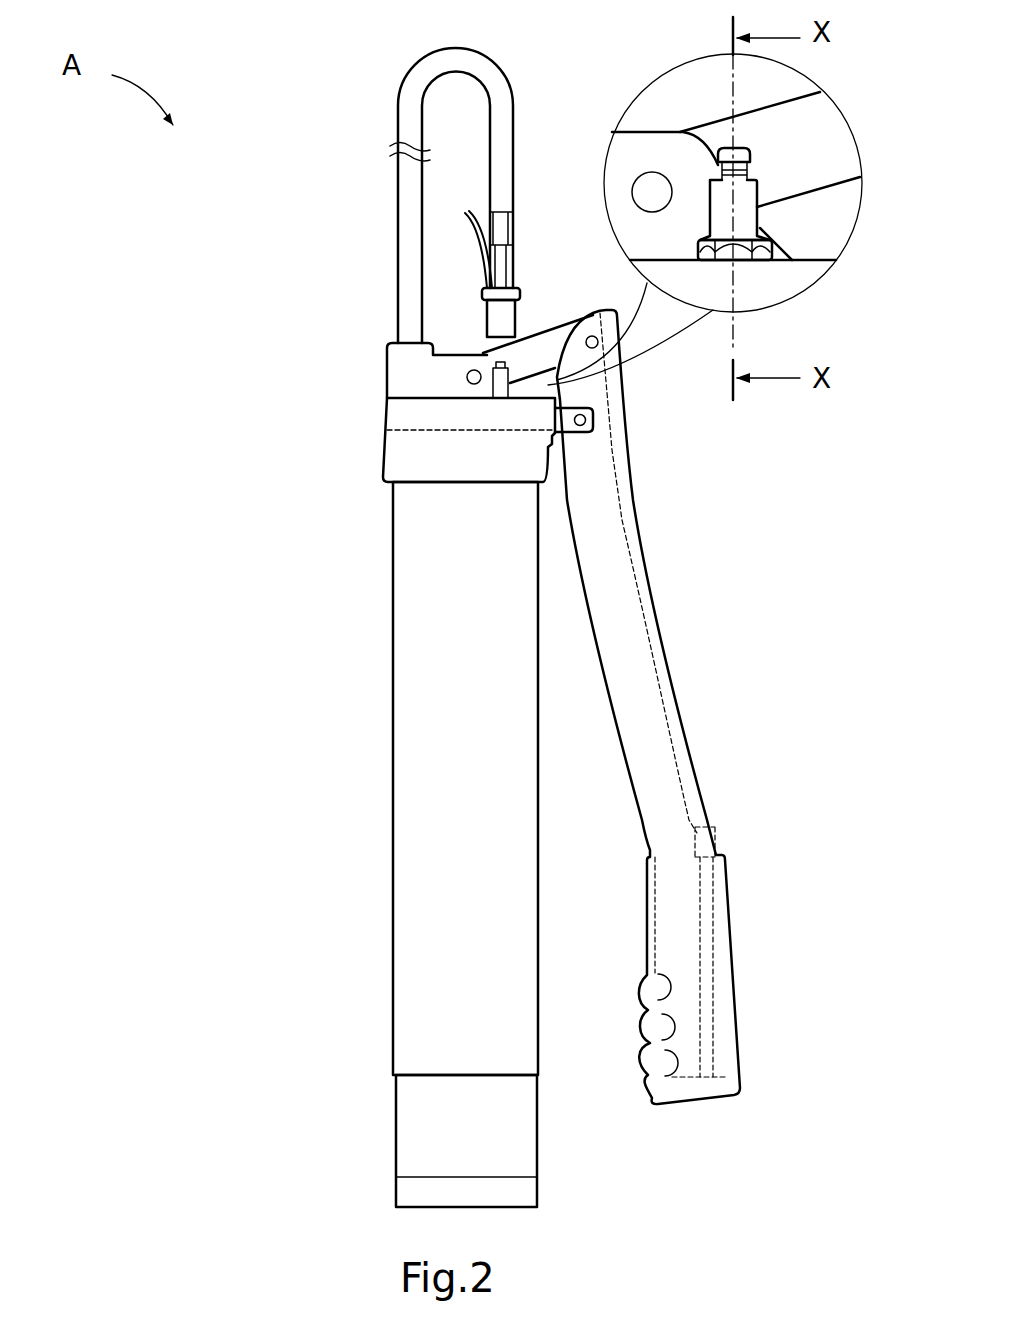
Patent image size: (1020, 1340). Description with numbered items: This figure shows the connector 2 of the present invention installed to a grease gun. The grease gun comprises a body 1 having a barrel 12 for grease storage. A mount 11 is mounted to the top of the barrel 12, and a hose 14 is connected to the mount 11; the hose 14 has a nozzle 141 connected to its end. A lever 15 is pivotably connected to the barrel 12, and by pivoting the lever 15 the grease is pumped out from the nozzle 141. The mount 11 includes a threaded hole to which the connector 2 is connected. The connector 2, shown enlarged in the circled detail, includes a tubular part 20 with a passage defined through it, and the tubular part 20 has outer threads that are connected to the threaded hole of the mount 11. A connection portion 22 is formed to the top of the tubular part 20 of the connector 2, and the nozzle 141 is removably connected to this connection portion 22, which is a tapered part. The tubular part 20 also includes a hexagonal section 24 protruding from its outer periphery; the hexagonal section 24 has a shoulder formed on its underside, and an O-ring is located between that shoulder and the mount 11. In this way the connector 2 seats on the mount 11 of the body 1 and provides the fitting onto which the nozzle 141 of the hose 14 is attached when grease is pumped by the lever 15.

The body 1 is at (227, 513).
The mount 11 is at (393, 448).
The barrel 12 is at (408, 535).
The hose 14 is at (408, 242).
The nozzle 141 is at (508, 322).
The lever 15 is at (597, 443).
The connector 2 is at (790, 262).
The tubular part 20 is at (745, 197).
The connection portion 22 is at (717, 165).
The hexagonal section 24 is at (700, 250).